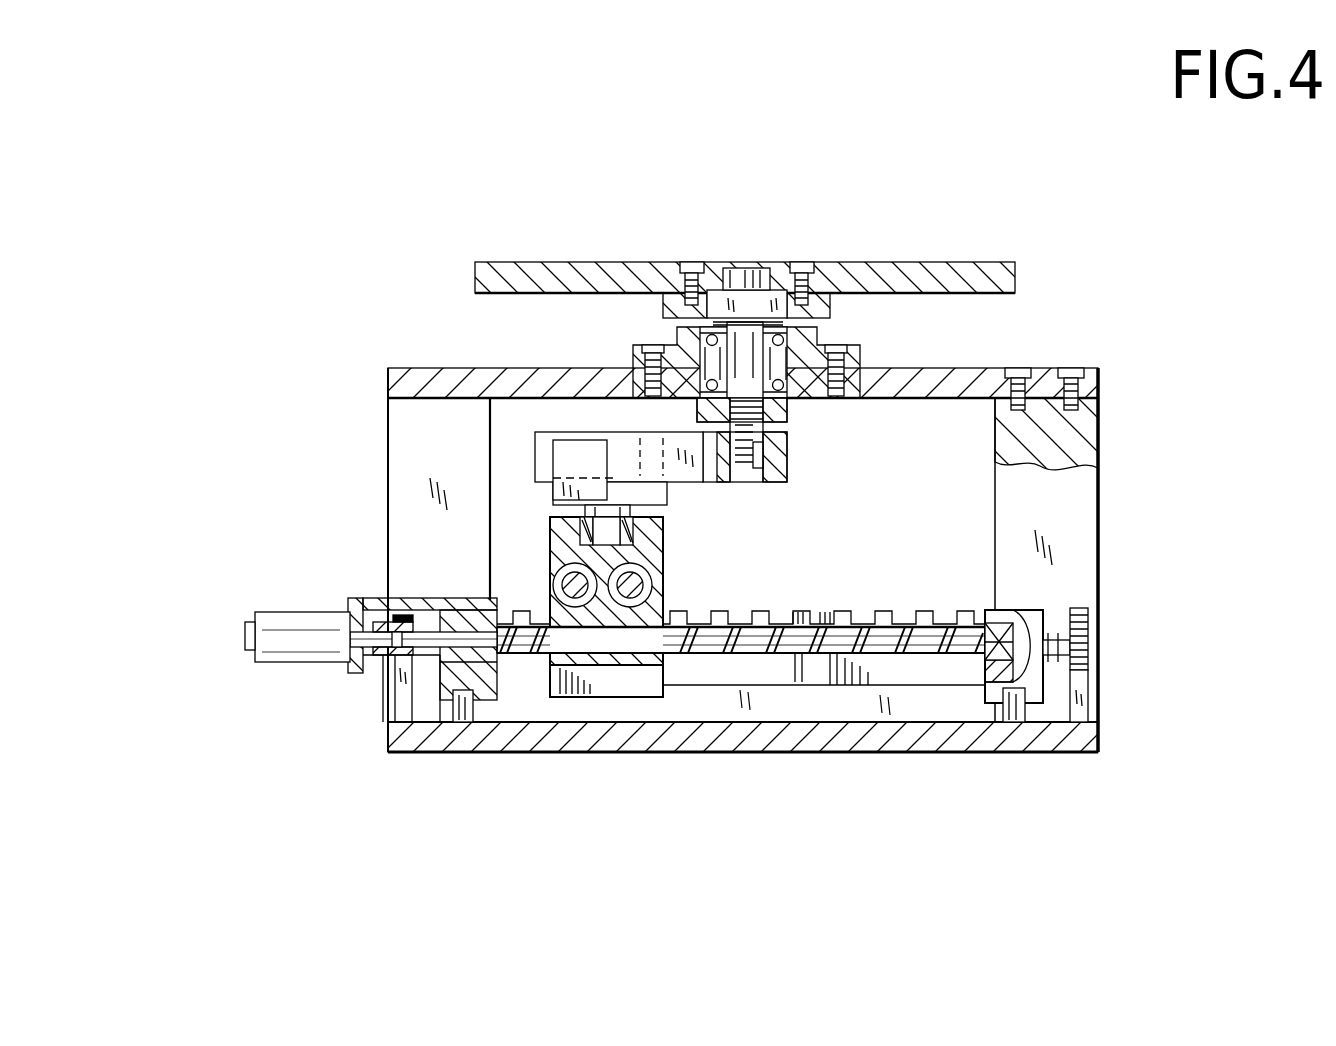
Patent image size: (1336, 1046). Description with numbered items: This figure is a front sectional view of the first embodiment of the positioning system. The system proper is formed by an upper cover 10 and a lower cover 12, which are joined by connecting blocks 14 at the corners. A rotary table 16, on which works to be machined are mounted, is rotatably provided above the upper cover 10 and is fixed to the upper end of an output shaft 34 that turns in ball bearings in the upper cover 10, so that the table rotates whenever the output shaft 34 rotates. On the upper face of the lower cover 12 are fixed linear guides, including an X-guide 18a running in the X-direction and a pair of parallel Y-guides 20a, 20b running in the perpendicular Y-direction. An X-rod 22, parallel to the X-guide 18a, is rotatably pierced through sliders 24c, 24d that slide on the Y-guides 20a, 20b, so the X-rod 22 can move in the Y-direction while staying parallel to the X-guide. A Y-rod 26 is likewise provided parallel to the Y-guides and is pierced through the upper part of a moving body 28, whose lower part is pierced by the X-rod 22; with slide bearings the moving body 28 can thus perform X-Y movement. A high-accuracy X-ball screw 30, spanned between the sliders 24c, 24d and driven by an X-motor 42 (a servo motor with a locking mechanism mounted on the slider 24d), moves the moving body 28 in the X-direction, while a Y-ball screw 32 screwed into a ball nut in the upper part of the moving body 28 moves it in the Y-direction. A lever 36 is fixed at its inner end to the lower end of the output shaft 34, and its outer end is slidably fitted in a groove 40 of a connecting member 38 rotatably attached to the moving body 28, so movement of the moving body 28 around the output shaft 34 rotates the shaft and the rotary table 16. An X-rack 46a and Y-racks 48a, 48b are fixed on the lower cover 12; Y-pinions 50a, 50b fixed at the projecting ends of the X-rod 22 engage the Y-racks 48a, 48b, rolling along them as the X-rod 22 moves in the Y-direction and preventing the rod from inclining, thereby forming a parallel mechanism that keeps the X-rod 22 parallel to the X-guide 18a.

The upper cover 10 is at (420, 368).
The lower cover 12 is at (1088, 745).
The connecting blocks 14 is at (402, 458).
The rotary table 16 is at (1017, 284).
The X-guide 18a is at (812, 668).
The Y-guide 20a is at (1040, 712).
The Y-guide 20b is at (455, 702).
The X-rod 22 is at (1045, 608).
The slider 24c is at (1012, 612).
The slider 24d is at (530, 688).
The Y-rod 26 is at (557, 573).
The moving body 28 is at (682, 535).
The X-ball screw 30 is at (737, 657).
The Y-ball screw 32 is at (645, 580).
The output shaft 34 is at (767, 428).
The lever 36 is at (790, 465).
The connecting member 38 is at (575, 458).
The groove 40 is at (635, 442).
The X-motor 42 is at (265, 660).
The X-rack 46a is at (930, 600).
The Y-rack 48a is at (1088, 693).
The Y-rack 48b is at (397, 680).
The Y-pinion 50a is at (1088, 637).
The Y-pinion 50b is at (395, 668).